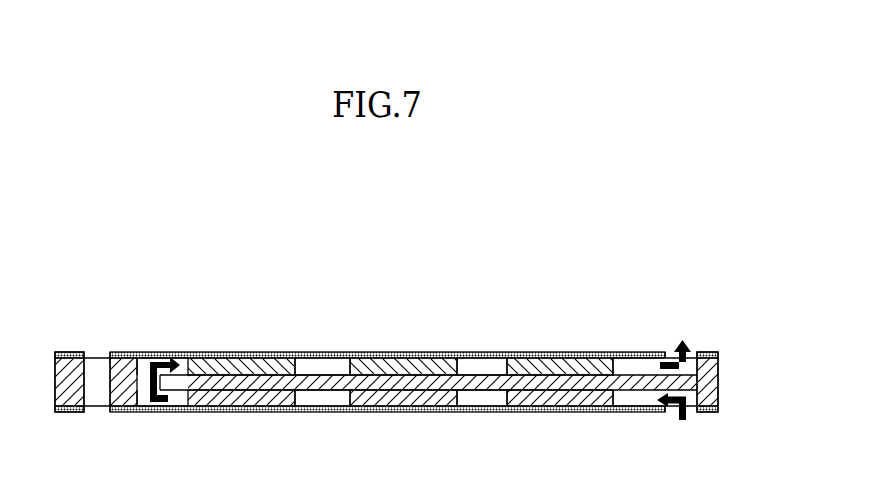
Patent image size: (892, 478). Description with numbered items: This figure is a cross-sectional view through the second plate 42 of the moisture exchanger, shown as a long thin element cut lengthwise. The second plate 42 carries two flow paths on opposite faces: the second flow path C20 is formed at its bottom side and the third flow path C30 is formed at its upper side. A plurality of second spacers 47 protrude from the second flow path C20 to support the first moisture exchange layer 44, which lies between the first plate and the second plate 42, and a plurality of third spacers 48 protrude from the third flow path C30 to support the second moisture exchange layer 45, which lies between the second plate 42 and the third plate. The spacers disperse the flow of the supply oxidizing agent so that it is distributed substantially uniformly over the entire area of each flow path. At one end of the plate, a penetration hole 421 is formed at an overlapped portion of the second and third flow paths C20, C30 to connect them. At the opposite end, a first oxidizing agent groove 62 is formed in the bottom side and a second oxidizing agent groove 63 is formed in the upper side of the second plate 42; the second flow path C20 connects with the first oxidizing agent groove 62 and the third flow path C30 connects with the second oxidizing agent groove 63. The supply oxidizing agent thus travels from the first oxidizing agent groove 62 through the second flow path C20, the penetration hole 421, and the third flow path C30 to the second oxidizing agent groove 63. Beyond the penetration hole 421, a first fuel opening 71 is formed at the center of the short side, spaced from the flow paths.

The second plate 42 is at (72, 403).
The first fuel opening 71 is at (93, 362).
The penetration hole 421 is at (140, 378).
The second moisture exchange layer 45 is at (422, 362).
The first moisture exchange layer 44 is at (432, 408).
The third spacers 48 is at (231, 363).
The second spacers 47 is at (233, 400).
The third flow path C30 is at (321, 363).
The second flow path C20 is at (325, 398).
The second oxidizing agent groove 63 is at (692, 364).
The first oxidizing agent groove 62 is at (692, 413).